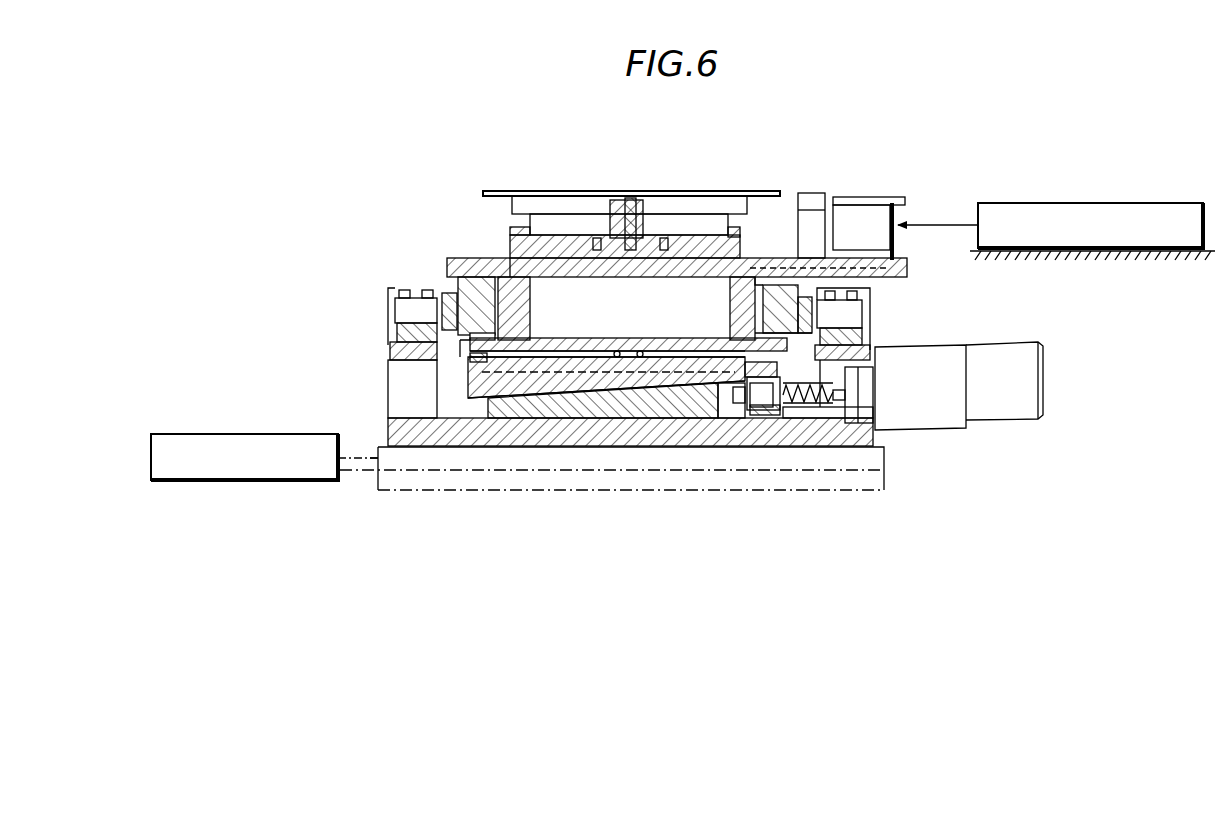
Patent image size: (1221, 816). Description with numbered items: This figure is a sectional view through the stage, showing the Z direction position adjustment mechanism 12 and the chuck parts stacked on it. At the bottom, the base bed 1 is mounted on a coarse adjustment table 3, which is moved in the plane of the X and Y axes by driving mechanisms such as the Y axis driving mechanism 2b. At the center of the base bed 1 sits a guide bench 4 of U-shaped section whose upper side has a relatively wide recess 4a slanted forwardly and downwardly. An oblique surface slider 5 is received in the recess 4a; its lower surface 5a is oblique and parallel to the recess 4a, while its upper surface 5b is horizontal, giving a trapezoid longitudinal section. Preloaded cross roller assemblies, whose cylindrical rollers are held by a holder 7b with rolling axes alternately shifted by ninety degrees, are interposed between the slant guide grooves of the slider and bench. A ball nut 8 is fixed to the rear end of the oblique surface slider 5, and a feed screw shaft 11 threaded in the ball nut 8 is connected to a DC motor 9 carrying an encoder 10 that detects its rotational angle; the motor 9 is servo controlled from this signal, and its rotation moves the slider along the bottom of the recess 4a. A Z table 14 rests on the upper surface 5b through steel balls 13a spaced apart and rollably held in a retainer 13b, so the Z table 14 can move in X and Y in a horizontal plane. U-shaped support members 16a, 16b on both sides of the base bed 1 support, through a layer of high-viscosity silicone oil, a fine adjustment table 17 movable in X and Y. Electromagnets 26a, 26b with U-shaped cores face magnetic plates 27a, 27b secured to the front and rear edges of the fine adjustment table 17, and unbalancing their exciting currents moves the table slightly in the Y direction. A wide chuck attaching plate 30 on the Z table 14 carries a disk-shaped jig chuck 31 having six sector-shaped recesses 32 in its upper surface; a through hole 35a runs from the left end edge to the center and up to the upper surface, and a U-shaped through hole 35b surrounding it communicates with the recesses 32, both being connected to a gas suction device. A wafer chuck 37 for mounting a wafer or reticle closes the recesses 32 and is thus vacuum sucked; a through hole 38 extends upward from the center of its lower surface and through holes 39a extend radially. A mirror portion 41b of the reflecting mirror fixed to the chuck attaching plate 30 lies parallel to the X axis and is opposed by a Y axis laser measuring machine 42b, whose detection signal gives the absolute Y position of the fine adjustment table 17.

The base bed 1 is at (412, 432).
The Y axis driving mechanism 2b is at (178, 434).
The coarse adjustment table 3 is at (884, 449).
The guide bench 4 is at (693, 405).
The recess 4a is at (655, 388).
The oblique surface slider 5 is at (542, 382).
The lower surface 5a is at (480, 386).
The upper surface 5b is at (672, 352).
The holder 7b is at (607, 341).
The ball nut 8 is at (763, 405).
The DC motor 9 is at (945, 428).
The encoder 10 is at (1013, 419).
The feed screw shaft 11 is at (815, 402).
The Z direction position adjustment mechanism 12 is at (732, 400).
The steel balls 13a is at (613, 358).
The retainer 13b is at (588, 360).
The Z table 14 is at (466, 348).
The support member 16a is at (400, 390).
The support member 16b is at (868, 350).
The fine adjustment table 17 is at (476, 290).
The electromagnet 26a is at (382, 292).
The electromagnet 26b is at (862, 308).
The magnetic plate 27a is at (448, 296).
The magnetic plate 27b is at (862, 332).
The chuck attaching plate 30 is at (908, 267).
The jig chuck 31 is at (550, 232).
The recesses 32 is at (570, 237).
The through hole 35a is at (650, 252).
The through hole 35b is at (594, 238).
The wafer chuck 37 is at (722, 198).
The through hole 38 is at (641, 240).
The through holes 39a is at (620, 200).
The mirror portion 41b is at (898, 216).
The Y axis laser measuring machine 42b is at (1136, 203).